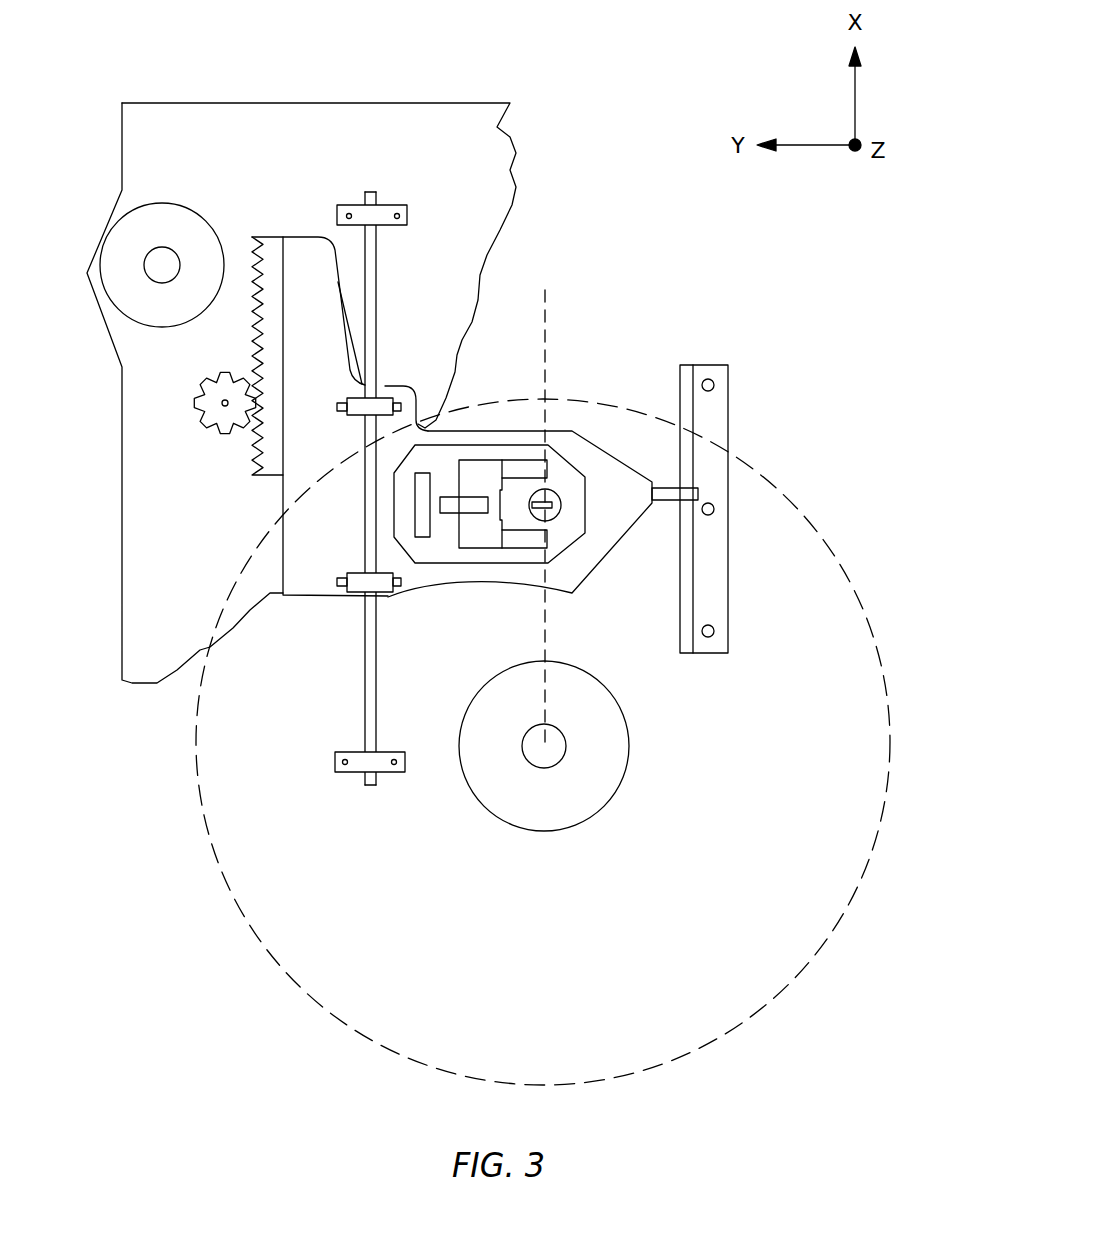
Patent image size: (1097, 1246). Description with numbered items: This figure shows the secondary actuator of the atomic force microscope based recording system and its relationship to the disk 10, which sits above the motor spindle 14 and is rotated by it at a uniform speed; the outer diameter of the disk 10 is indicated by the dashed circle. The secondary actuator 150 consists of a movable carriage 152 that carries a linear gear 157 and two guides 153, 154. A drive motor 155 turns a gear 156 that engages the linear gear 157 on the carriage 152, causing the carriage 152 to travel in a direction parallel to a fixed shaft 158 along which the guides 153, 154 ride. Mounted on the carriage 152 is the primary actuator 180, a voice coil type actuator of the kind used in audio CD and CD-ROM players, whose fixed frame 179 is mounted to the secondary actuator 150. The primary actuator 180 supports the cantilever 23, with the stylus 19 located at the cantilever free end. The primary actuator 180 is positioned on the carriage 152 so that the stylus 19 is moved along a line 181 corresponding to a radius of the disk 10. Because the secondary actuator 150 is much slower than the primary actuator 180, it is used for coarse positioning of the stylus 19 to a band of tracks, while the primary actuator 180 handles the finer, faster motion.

The disk 10 is at (863, 608).
The motor spindle 14 is at (597, 810).
The stylus 19 is at (543, 490).
The cantilever 23 is at (548, 507).
The secondary actuator 150 is at (310, 257).
The movable carriage 152 is at (607, 478).
The guide 153 is at (380, 590).
The guide 154 is at (387, 387).
The drive motor 155 is at (148, 222).
The gear 156 is at (197, 388).
The linear gear 157 is at (248, 437).
The fixed shaft 158 is at (372, 293).
The fixed frame 179 is at (438, 462).
The primary actuator 180 is at (532, 452).
The line 181 is at (548, 312).